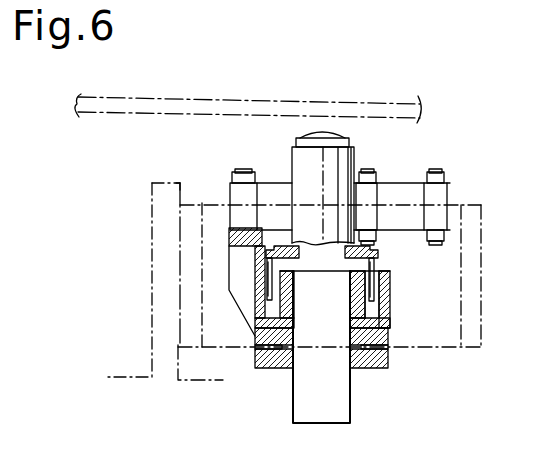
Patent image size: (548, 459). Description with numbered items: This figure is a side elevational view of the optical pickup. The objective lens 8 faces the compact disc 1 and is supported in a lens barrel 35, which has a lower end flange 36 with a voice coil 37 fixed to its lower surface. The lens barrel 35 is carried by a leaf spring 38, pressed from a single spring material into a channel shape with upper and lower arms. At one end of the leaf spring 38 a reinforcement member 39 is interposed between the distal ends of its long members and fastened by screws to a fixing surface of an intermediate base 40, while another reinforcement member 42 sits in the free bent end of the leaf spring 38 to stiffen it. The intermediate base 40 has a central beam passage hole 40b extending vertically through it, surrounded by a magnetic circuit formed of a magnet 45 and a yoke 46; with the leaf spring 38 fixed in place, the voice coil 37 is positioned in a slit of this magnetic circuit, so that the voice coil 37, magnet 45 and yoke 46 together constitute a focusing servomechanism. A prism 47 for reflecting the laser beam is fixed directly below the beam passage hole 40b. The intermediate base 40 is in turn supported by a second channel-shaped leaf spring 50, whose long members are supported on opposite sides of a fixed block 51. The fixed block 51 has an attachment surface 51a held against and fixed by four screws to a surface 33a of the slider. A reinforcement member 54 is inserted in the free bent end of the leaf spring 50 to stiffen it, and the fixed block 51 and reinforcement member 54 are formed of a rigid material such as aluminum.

The compact disc 1 is at (214, 100).
The objective lens 8 is at (336, 132).
The surface of the slider 33a is at (183, 190).
The lens barrel 35 is at (346, 160).
The lower end flange 36 is at (282, 245).
The voice coil 37 is at (375, 258).
The leaf spring 38 is at (396, 184).
The reinforcement member 39 is at (231, 188).
The intermediate base 40 is at (246, 308).
The beam passage hole 40b is at (356, 337).
The reinforcement member 42 is at (438, 198).
The magnet 45 is at (265, 370).
The yoke 46 is at (392, 305).
The prism 47 is at (335, 405).
The leaf spring 50 is at (438, 353).
The fixed block 51 is at (188, 223).
The attachment surface 51a is at (178, 268).
The reinforcement member 54 is at (474, 299).